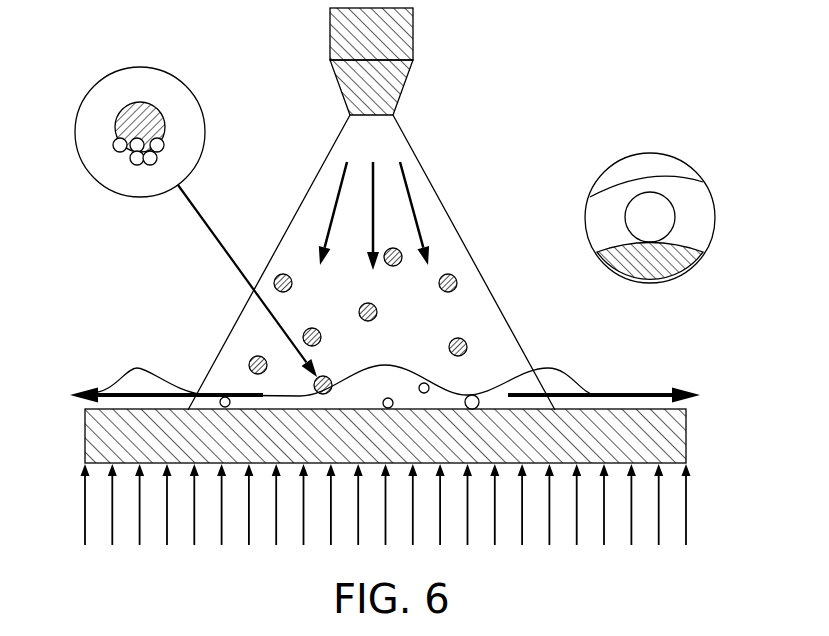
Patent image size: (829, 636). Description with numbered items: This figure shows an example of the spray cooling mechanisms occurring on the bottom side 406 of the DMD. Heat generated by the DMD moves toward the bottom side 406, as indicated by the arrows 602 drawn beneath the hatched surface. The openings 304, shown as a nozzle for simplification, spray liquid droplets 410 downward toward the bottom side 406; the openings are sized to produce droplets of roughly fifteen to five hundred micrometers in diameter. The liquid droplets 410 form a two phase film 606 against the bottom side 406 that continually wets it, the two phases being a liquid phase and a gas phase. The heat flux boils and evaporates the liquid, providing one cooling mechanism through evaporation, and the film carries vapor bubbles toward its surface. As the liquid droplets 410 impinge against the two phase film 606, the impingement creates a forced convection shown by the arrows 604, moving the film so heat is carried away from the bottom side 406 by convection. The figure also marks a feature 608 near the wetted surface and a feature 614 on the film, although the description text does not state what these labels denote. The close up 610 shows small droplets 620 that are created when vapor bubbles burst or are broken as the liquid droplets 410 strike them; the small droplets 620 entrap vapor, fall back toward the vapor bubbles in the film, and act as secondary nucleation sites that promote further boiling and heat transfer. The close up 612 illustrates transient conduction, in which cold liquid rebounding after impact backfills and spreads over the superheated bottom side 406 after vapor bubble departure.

The openings 304 is at (413, 45).
The liquid droplets 410 is at (285, 272).
The bottom side 406 is at (660, 410).
The arrows 602 is at (686, 503).
The arrows 604 is at (96, 405).
The two phase film 606 is at (563, 361).
The bubble 608 is at (245, 403).
The close up 610 is at (102, 77).
The close up 612 is at (692, 165).
The film bump 614 is at (157, 364).
The small droplets 620 is at (122, 140).